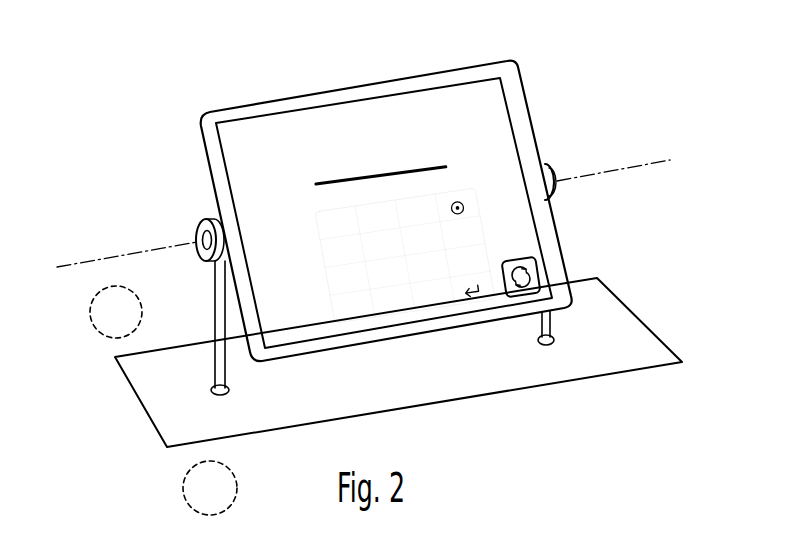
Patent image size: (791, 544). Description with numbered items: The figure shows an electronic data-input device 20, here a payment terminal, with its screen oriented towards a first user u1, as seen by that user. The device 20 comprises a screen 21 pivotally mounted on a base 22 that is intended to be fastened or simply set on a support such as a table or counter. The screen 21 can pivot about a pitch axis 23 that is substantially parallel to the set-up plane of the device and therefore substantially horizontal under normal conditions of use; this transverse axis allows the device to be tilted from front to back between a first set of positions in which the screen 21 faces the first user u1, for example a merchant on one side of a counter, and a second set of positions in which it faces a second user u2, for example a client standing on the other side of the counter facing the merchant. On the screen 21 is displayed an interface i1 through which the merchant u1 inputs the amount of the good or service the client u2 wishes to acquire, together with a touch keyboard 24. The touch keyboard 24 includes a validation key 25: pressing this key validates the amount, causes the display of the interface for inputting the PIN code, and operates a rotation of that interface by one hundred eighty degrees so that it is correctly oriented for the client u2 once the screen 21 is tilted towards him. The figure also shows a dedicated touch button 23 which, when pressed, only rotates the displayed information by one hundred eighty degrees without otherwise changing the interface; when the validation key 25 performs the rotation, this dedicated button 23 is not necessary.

The electronic data-input device 20 is at (522, 100).
The screen 21 is at (260, 133).
The base 22 is at (620, 362).
The pitch axis 23 is at (70, 255).
The touch keyboard 24 is at (412, 312).
The validation key 25 is at (470, 297).
The interface i1 is at (440, 103).
The first user u1 is at (210, 488).
The second user u2 is at (116, 312).